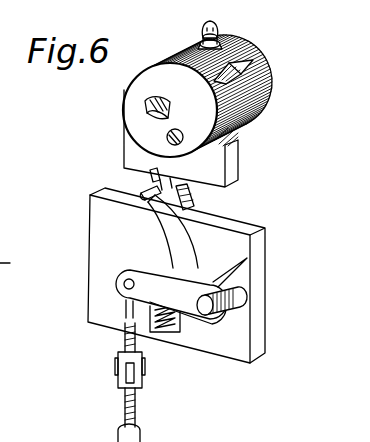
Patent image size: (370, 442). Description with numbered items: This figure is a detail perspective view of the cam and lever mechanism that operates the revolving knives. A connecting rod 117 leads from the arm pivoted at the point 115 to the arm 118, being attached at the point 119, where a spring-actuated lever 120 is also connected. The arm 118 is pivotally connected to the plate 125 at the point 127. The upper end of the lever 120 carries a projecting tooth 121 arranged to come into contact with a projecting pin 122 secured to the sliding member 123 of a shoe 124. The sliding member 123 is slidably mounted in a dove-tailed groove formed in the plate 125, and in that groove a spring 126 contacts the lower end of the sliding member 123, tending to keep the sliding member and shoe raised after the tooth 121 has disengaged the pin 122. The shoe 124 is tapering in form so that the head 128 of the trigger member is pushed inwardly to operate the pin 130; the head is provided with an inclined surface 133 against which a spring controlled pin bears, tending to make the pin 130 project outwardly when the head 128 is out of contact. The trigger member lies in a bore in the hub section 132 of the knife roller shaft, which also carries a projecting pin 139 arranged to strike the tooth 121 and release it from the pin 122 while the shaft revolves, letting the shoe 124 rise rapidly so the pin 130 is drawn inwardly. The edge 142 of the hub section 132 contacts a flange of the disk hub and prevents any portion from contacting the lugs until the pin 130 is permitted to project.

The pivot point 115 is at (81, 433).
The connecting rod 117 is at (138, 408).
The arm 118 is at (181, 291).
The connection point 119 is at (124, 284).
The spring-actuated lever 120 is at (150, 256).
The projecting tooth 121 is at (180, 200).
The projecting pin 122 is at (142, 191).
The sliding member 123 is at (150, 176).
The shoe 124 is at (132, 143).
The plate 125 is at (256, 232).
The spring 126 is at (182, 328).
The pivot point 127 is at (238, 305).
The head 128 is at (203, 31).
The pin 130 is at (183, 129).
The hub section 132 is at (258, 121).
The inclined surface 133 is at (218, 44).
The projecting pin 139 is at (246, 68).
The edge 142 is at (128, 96).